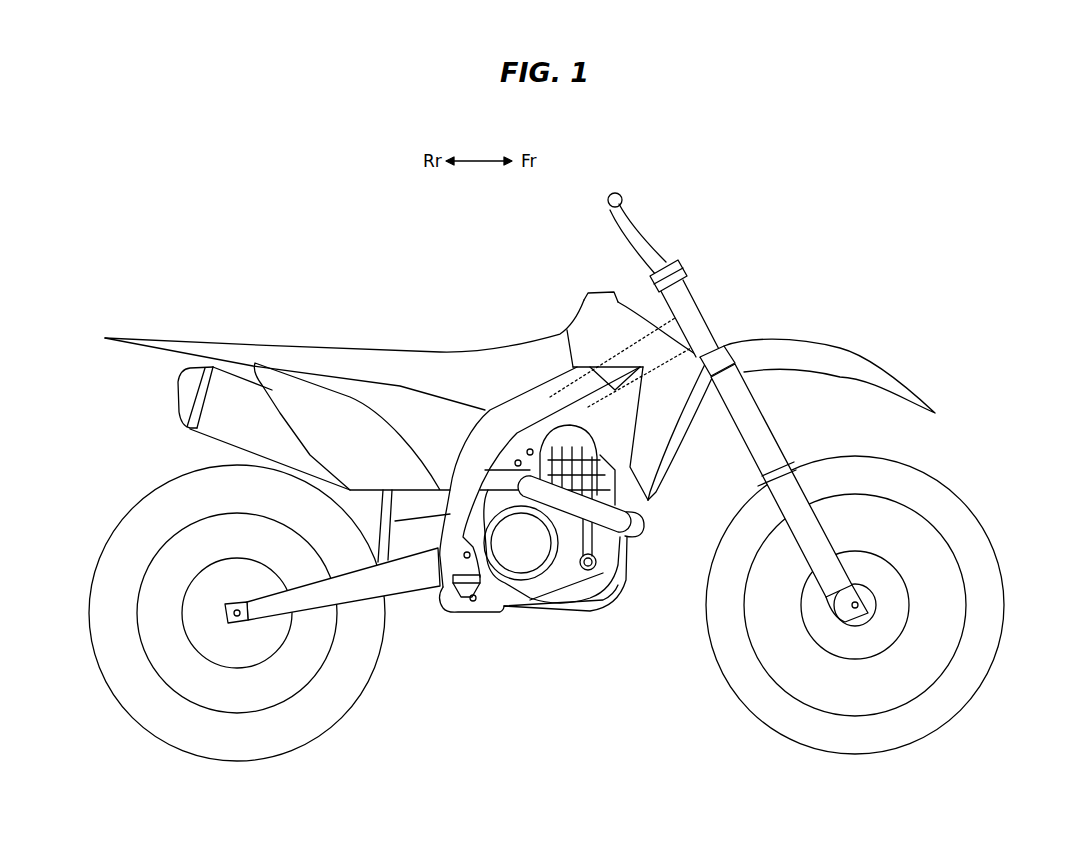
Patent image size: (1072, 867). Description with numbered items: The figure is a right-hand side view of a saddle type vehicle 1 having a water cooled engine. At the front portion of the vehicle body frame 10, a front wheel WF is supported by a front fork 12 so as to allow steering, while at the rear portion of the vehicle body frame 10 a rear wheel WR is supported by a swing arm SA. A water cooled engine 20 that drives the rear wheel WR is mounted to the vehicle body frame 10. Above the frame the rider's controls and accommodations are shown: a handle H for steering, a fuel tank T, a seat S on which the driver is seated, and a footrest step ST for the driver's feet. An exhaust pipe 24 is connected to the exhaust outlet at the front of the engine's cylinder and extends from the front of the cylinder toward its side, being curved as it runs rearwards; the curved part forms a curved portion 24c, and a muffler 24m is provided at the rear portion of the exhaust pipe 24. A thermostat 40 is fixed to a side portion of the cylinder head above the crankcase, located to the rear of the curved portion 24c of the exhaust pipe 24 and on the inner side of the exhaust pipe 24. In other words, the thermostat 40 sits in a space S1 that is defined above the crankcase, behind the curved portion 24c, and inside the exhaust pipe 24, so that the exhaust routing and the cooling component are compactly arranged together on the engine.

The saddle type vehicle 1 is at (780, 281).
The vehicle body frame 10 is at (533, 418).
The front fork 12 is at (762, 435).
The water cooled engine 20 is at (537, 588).
The exhaust pipe 24 is at (637, 537).
The curved portion 24c is at (647, 523).
The muffler 24m is at (178, 390).
The thermostat 40 is at (587, 573).
The handle H is at (607, 203).
The seat S is at (391, 350).
The space S1 is at (650, 500).
The swing arm SA is at (400, 577).
The footrest step ST is at (467, 610).
The fuel tank T is at (573, 313).
The front wheel WF is at (953, 493).
The rear wheel WR is at (130, 510).